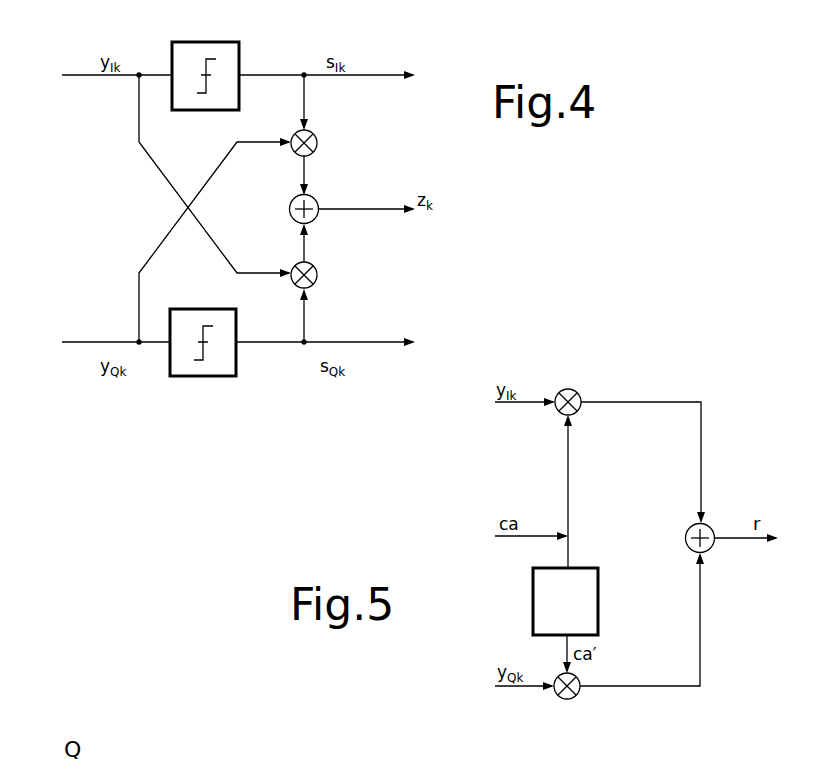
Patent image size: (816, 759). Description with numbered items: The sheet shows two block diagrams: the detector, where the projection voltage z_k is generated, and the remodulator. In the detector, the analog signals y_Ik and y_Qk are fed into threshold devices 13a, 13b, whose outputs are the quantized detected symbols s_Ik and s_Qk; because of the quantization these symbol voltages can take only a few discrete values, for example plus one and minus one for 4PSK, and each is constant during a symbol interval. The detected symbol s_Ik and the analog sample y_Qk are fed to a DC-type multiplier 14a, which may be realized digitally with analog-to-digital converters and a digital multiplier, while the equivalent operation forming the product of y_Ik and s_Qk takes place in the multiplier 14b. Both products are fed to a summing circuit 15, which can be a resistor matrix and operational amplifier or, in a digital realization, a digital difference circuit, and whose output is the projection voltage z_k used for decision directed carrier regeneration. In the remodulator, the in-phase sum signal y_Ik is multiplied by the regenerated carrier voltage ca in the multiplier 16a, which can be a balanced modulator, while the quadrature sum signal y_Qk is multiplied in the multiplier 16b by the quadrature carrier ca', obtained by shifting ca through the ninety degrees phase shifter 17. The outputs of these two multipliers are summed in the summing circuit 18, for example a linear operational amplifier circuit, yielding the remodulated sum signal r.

In FIG. 4, the threshold device 13a is at (228, 42).
In FIG. 4, the threshold device 13b is at (228, 376).
In FIG. 4, the DC-type multiplier 14a is at (318, 148).
In FIG. 4, the multiplier 14b is at (318, 281).
In FIG. 4, the summing circuit 15 is at (318, 203).
In FIG. 5, the multiplier 16a is at (580, 394).
In FIG. 5, the multiplier 16b is at (577, 696).
In FIG. 5, the 90 degrees phase shifter 17 is at (533, 595).
In FIG. 5, the summing circuit 18 is at (712, 525).